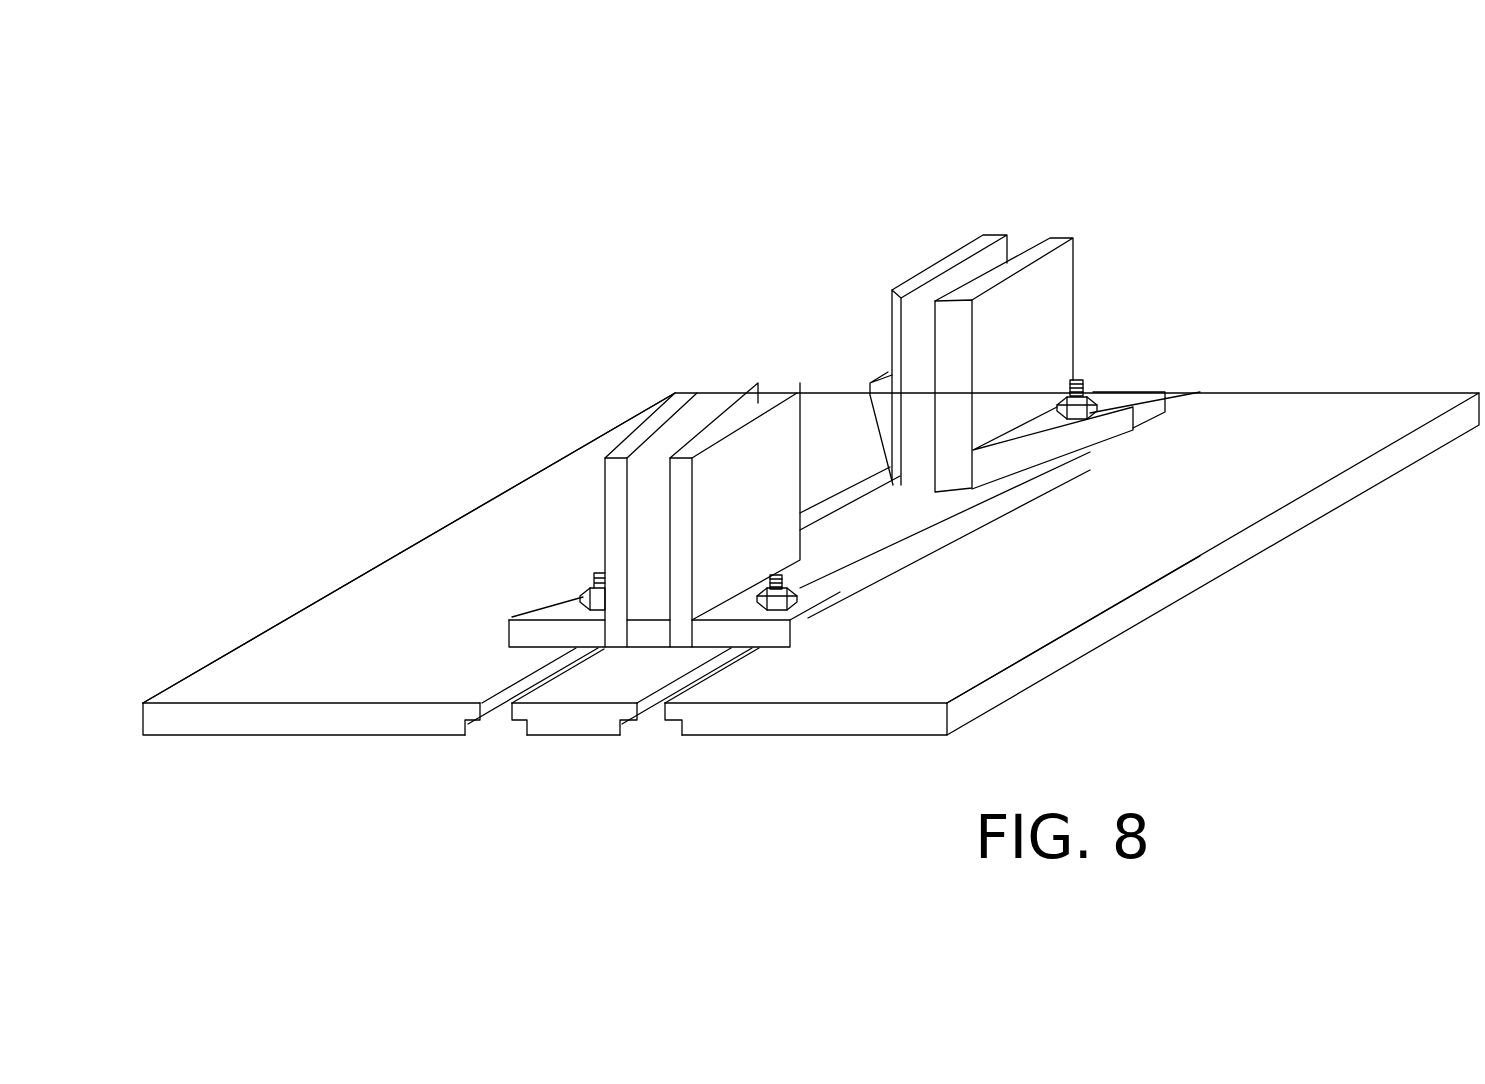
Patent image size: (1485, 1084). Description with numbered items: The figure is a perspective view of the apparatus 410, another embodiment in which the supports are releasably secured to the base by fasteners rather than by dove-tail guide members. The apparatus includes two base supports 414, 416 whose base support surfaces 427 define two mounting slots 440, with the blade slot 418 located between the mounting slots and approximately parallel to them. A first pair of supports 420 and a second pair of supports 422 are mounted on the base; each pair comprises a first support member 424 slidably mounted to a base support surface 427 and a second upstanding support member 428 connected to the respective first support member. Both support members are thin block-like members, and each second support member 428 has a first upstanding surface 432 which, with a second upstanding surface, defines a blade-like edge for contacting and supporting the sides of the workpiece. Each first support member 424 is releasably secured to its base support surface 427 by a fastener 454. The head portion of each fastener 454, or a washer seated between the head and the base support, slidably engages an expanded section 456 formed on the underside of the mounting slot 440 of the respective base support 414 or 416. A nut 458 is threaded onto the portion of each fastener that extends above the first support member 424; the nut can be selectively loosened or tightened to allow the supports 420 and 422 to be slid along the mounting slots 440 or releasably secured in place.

The apparatus 410 is at (776, 259).
The base support 414 is at (956, 671).
The base support 416 is at (282, 667).
The blade slot 418 is at (657, 640).
The first pair of supports 420 is at (1060, 233).
The second pair of supports 422 is at (724, 418).
The first support member 424 is at (872, 410).
The base support surface 427 is at (570, 541).
The second upstanding support member 428 is at (922, 268).
The first upstanding surface 432 is at (799, 385).
The mounting slot 440 is at (501, 731).
The fastener 454 is at (600, 585).
The expanded section 456 is at (472, 728).
The nut 458 is at (597, 592).